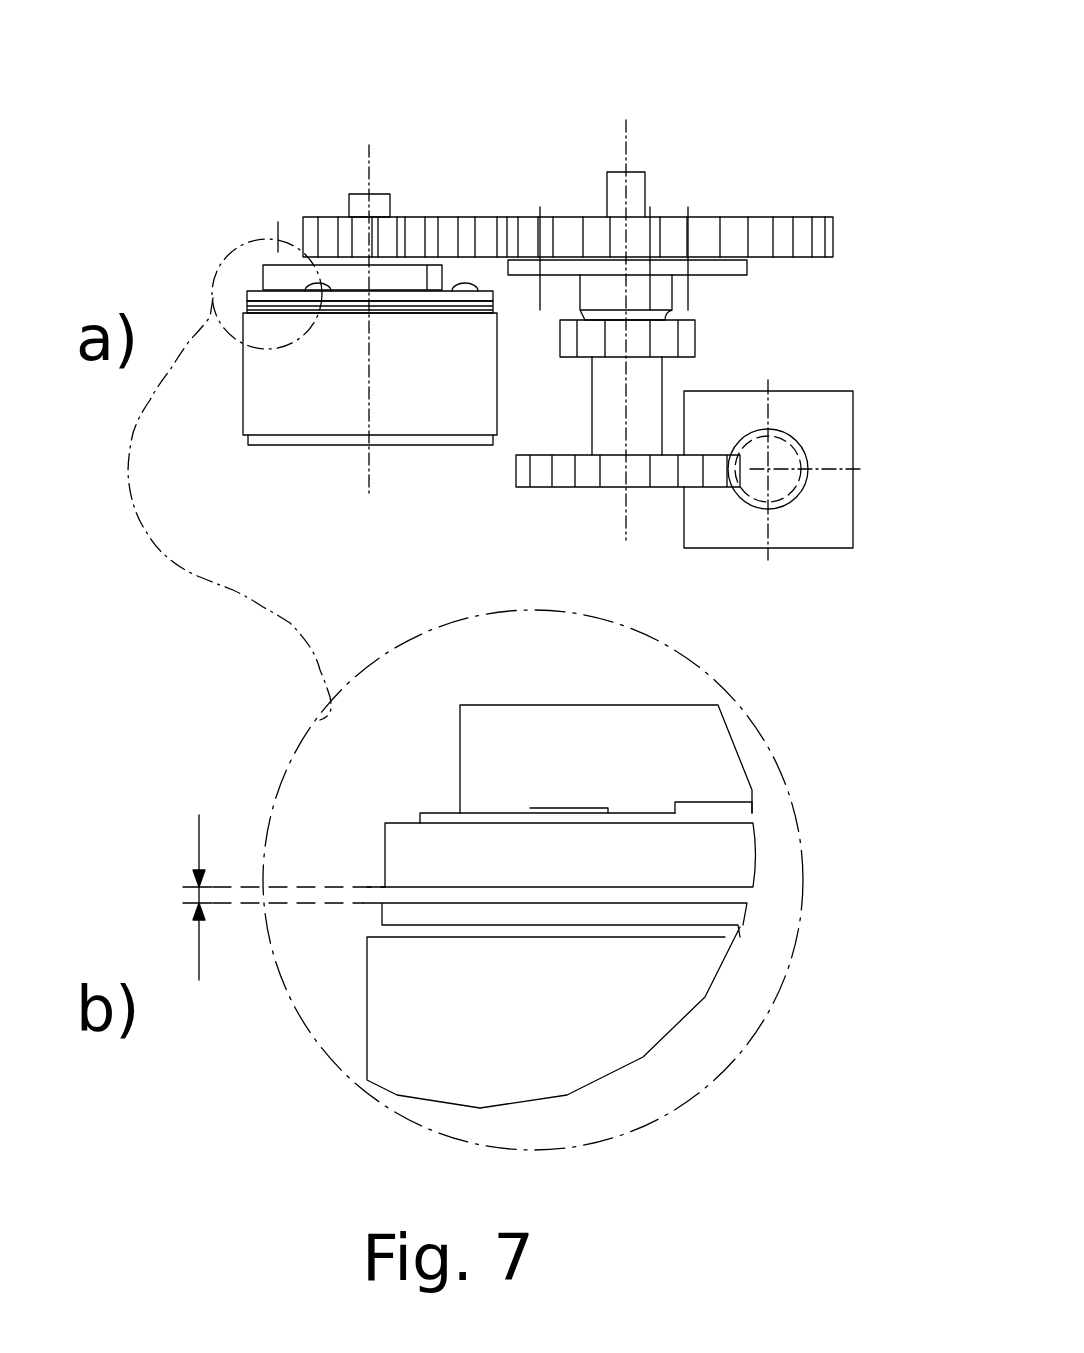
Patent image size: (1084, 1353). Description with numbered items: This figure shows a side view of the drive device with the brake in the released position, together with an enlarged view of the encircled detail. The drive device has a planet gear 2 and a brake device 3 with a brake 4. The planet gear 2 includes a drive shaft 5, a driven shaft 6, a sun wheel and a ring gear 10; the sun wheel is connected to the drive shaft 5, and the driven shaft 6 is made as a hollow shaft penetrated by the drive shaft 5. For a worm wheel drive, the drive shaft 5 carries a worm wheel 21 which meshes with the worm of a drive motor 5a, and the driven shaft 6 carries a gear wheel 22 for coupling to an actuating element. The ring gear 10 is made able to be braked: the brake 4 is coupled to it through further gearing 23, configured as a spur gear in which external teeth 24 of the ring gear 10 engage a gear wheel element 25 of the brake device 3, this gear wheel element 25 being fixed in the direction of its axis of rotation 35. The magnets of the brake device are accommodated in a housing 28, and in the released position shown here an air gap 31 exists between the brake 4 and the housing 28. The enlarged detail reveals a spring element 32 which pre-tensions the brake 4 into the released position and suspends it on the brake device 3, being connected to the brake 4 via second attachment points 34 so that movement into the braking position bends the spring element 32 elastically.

In FIG. 7a, the planet gear 2 is at (728, 287).
In FIG. 7a, the brake device 3 is at (237, 388).
In FIG. 7a, the brake 4 is at (387, 303).
In FIG. 7b, the brake 4 is at (410, 855).
In FIG. 7a, the drive shaft 5 is at (687, 307).
In FIG. 7a, the drive 5a is at (820, 520).
In FIG. 7a, the driven shaft 6 is at (648, 377).
In FIG. 7a, the ring gear 10 is at (755, 262).
In FIG. 7a, the worm wheel 21 is at (672, 473).
In FIG. 7a, the gear wheel 22 is at (685, 338).
In FIG. 7a, the further gearing 23 is at (432, 205).
In FIG. 7a, the external teeth 24 is at (836, 238).
In FIG. 7a, the gear wheel element 25 is at (320, 272).
In FIG. 7b, the gear wheel element 25 is at (606, 759).
In FIG. 7a, the housing 28 is at (277, 411).
In FIG. 7b, the housing 28 is at (403, 1038).
In FIG. 7b, the air gap 31 is at (202, 897).
In FIG. 7a, the spring element 32 is at (258, 291).
In FIG. 7b, the spring element 32 is at (437, 816).
In FIG. 7a, the second attachment points 34 is at (322, 296).
In FIG. 7b, the second attachment points 34 is at (700, 788).
In FIG. 7a, the axis of rotation 35 is at (372, 160).